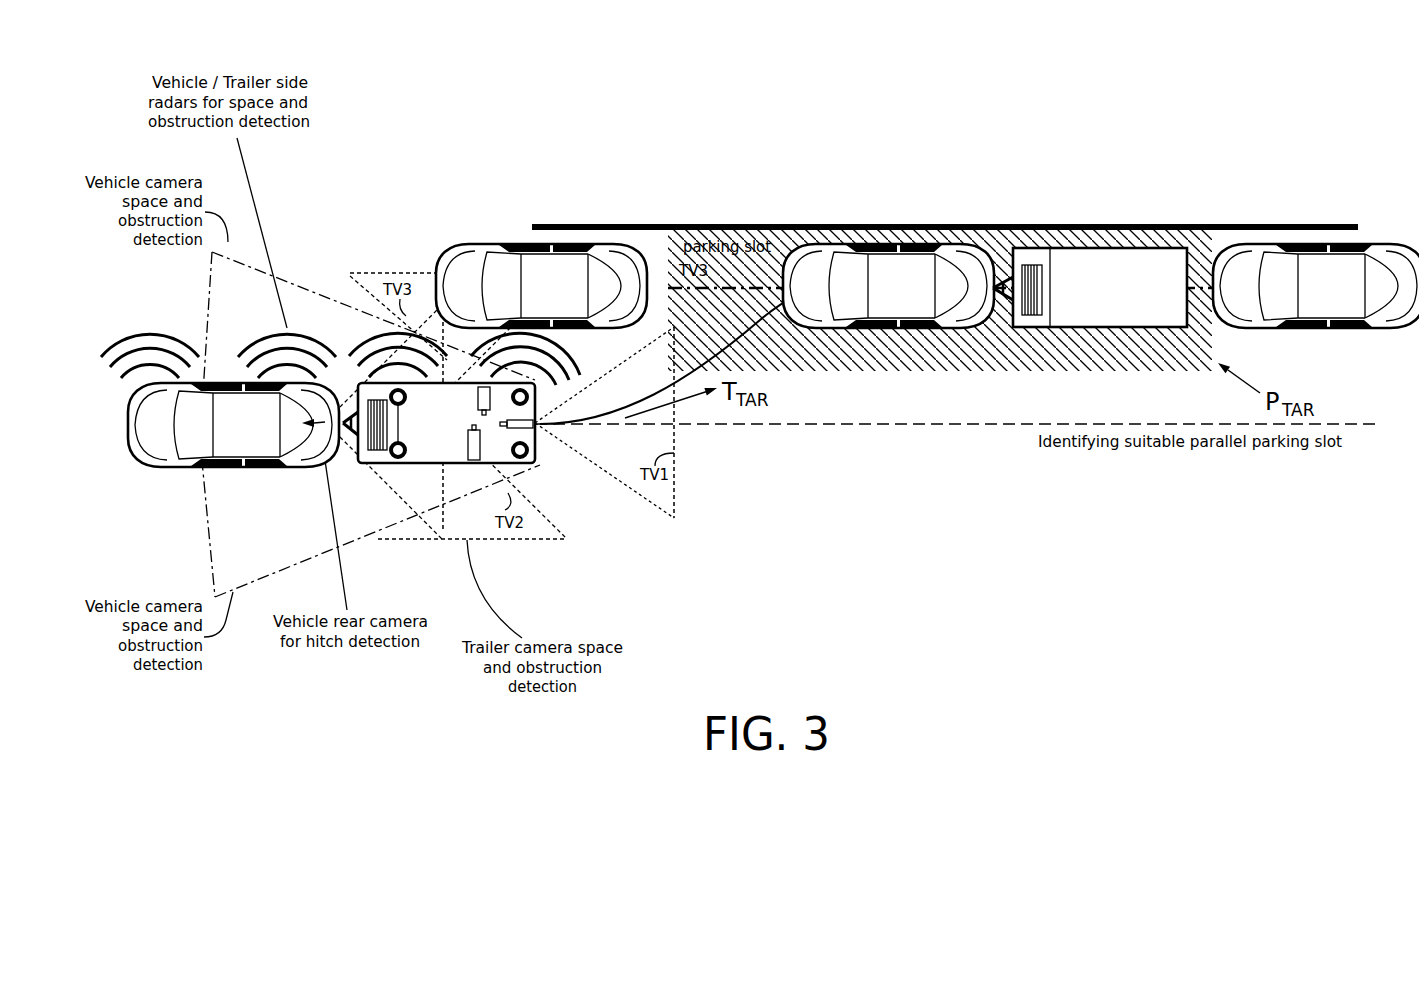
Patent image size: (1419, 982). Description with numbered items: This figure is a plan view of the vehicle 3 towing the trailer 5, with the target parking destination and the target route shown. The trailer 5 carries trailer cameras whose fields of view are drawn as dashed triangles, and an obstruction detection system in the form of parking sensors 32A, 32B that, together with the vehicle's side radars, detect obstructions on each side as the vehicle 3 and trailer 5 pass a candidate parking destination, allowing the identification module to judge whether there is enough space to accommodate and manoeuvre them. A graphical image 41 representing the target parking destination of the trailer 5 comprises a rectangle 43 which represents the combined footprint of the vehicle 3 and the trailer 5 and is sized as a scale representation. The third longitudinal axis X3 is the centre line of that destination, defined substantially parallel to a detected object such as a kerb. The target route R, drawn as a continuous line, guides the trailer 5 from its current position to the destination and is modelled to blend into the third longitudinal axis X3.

The vehicle 3 is at (194, 332).
The trailer 5 is at (369, 348).
The parking sensor 32A is at (520, 397).
The parking sensor 32B is at (520, 450).
The graphical image 41 is at (748, 228).
The rectangle 43 is at (1000, 352).
The third longitudinal axis X3 is at (1170, 288).
The target route R is at (770, 327).